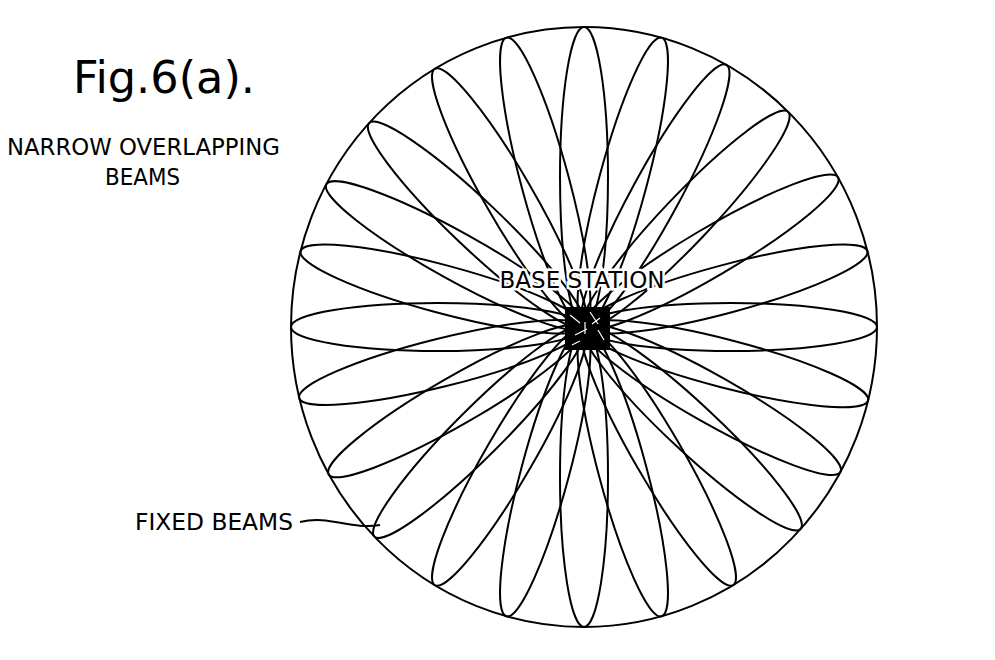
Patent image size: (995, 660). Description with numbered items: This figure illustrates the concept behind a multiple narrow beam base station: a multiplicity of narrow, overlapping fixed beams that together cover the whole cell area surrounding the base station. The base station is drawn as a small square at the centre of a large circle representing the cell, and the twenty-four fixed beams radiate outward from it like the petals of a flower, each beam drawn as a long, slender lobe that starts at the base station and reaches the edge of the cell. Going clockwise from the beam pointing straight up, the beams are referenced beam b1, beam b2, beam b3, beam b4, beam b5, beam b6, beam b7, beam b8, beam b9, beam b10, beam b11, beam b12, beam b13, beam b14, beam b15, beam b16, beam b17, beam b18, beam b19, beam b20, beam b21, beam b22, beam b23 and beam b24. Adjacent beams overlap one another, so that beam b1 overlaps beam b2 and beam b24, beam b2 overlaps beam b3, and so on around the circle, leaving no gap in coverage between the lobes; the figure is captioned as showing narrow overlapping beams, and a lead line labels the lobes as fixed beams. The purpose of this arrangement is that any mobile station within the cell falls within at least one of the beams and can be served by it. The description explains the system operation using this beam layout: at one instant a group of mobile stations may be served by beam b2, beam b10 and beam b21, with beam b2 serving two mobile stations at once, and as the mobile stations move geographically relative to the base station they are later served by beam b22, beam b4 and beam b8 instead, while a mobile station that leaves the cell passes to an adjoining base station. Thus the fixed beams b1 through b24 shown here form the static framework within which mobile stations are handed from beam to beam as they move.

The beam b1 is at (584, 177).
The beam b2 is at (623, 182).
The beam b3 is at (655, 195).
The beam b4 is at (686, 219).
The beam b5 is at (711, 252).
The beam b6 is at (726, 289).
The beam b7 is at (730, 327).
The beam b8 is at (726, 364).
The beam b9 is at (712, 399).
The beam b10 is at (692, 427).
The beam b11 is at (658, 456).
The beam b12 is at (623, 472).
The beam b13 is at (584, 477).
The beam b14 is at (545, 472).
The beam b15 is at (509, 456).
The beam b16 is at (479, 432).
The beam b17 is at (456, 400).
The beam b18 is at (441, 363).
The beam b19 is at (437, 327).
The beam b20 is at (442, 289).
The beam b21 is at (455, 255).
The beam b22 is at (477, 225).
The beam b23 is at (509, 198).
The beam b24 is at (545, 182).